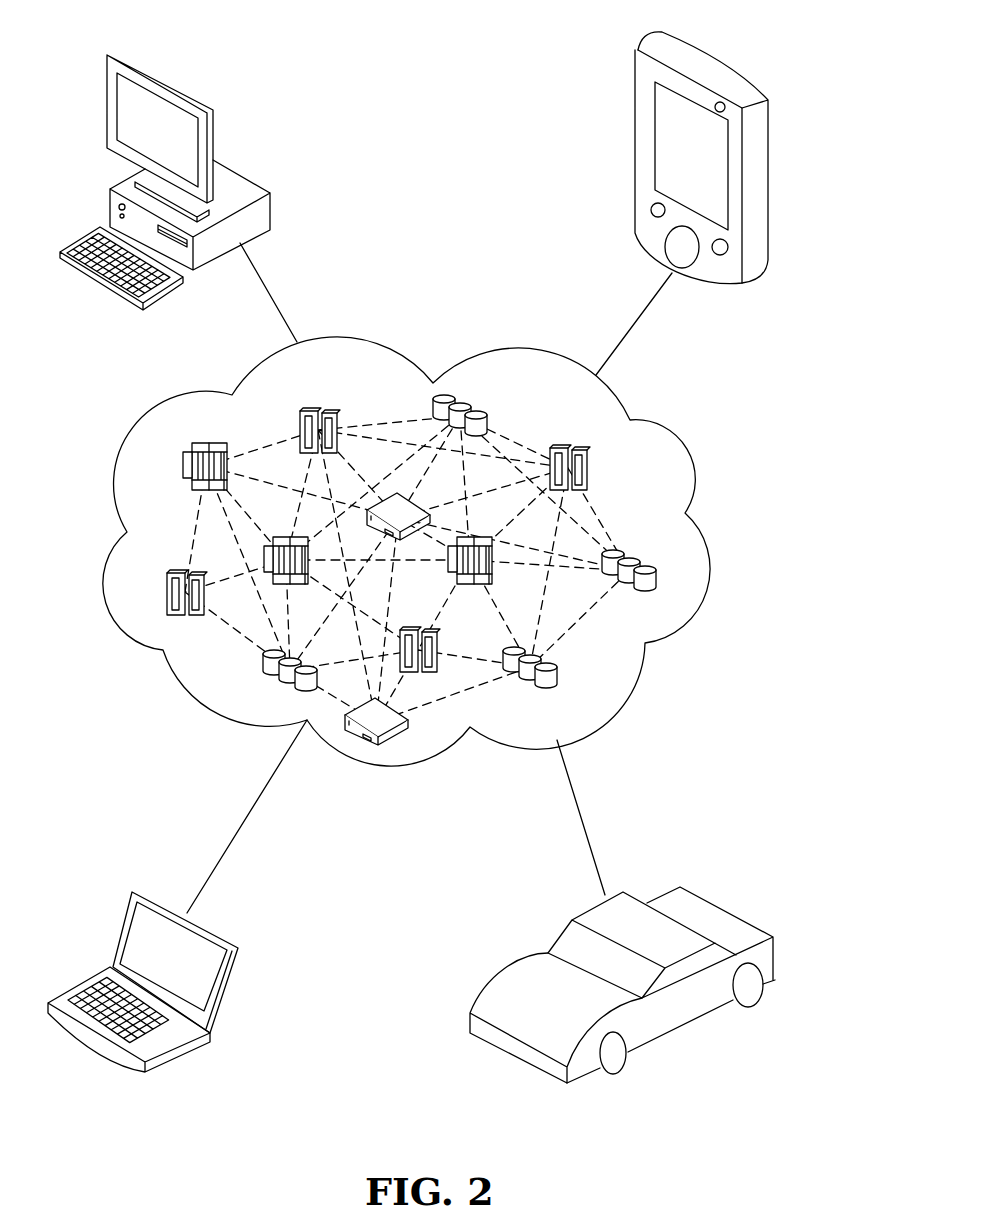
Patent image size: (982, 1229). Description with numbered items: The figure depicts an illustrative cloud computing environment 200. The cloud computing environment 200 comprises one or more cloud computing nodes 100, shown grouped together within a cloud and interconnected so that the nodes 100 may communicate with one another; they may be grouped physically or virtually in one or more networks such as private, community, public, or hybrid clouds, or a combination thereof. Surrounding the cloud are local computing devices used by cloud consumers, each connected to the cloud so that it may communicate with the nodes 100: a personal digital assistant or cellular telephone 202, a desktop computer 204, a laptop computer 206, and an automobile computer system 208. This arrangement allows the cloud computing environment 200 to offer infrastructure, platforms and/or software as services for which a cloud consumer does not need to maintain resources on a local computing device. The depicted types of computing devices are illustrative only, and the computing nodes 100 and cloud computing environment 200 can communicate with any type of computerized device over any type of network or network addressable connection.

The cloud computing nodes 100 is at (632, 492).
The cloud computing environment 200 is at (436, 243).
The personal digital assistant (PDA) or cellular telephone 202 is at (633, 107).
The desktop computer 204 is at (270, 203).
The laptop computer 206 is at (235, 955).
The automobile computer system 208 is at (777, 953).